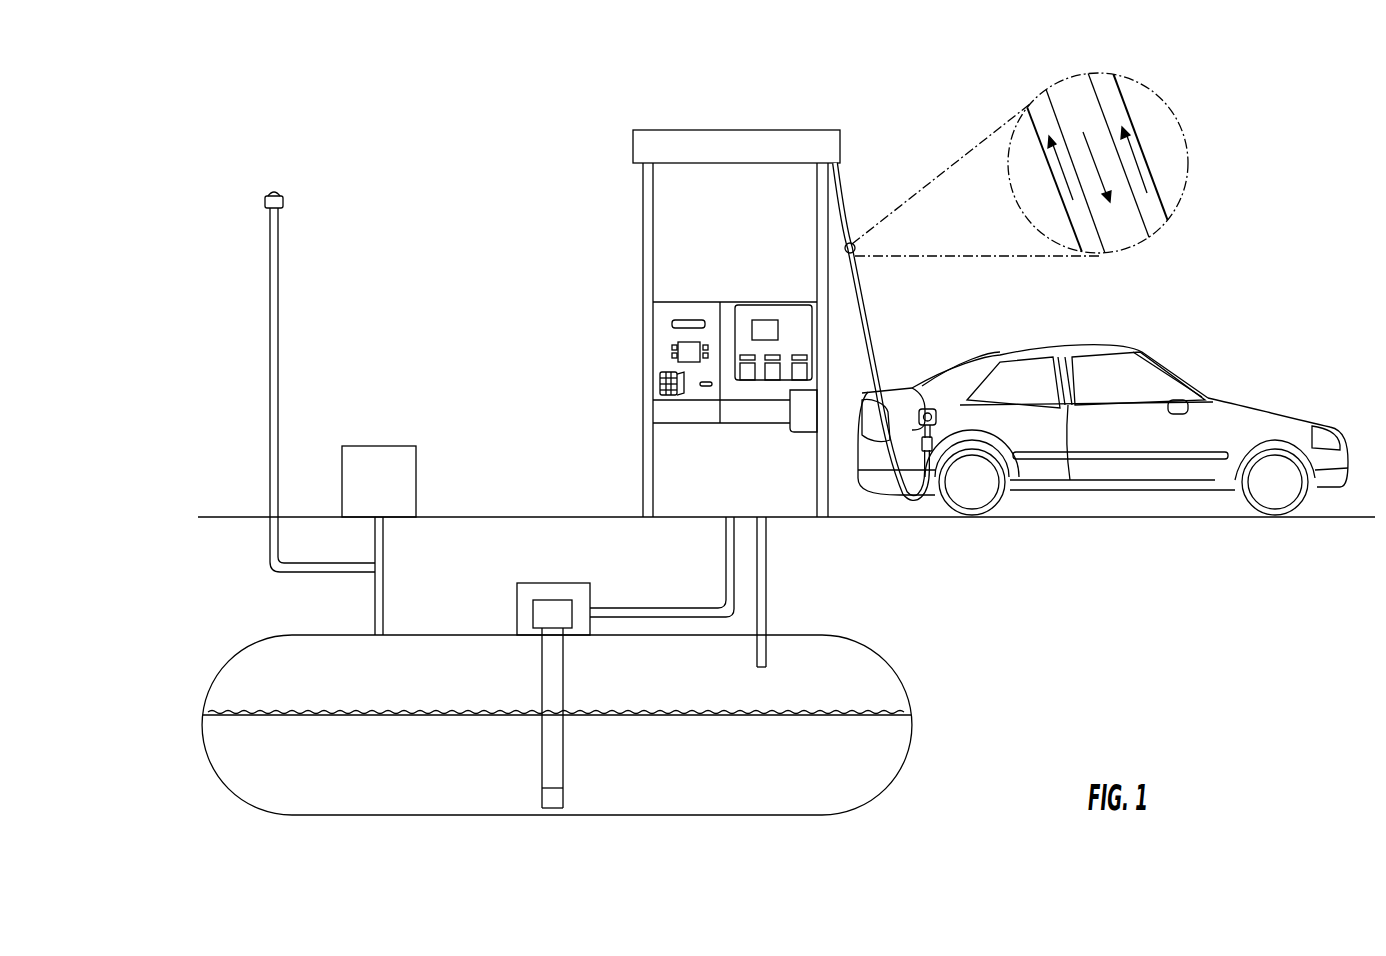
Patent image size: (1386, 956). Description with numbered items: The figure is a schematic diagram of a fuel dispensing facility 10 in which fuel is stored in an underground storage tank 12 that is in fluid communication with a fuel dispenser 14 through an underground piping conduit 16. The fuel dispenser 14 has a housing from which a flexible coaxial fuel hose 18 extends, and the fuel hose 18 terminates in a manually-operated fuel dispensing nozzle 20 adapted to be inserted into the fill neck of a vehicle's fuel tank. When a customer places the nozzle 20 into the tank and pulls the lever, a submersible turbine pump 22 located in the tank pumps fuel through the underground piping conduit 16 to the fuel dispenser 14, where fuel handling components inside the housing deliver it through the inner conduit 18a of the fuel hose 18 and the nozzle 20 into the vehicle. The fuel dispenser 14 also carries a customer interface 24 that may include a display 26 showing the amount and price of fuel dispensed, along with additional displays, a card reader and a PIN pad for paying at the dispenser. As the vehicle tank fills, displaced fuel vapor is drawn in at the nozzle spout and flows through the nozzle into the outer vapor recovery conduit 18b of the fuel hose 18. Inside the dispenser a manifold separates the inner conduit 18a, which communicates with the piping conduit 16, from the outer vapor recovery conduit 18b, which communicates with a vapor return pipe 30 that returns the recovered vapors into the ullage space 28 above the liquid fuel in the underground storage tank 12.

The fuel dispensing facility 10 is at (466, 135).
The underground storage tank 12 is at (902, 680).
The fuel dispenser 14 is at (752, 130).
The underground piping conduit 16 is at (726, 572).
The fuel hose 18 is at (866, 316).
The inner conduit 18a is at (1124, 237).
The outer vapor recovery conduit 18b is at (1098, 87).
The fuel dispensing nozzle 20 is at (912, 410).
The submersible turbine pump 22 is at (540, 795).
The customer interface 24 is at (726, 290).
The display 26 is at (766, 320).
The ullage space 28 is at (666, 694).
The vapor return pipe 30 is at (767, 598).